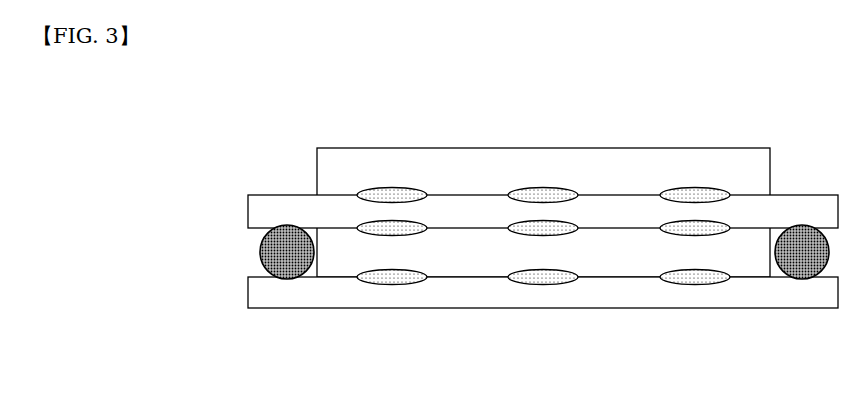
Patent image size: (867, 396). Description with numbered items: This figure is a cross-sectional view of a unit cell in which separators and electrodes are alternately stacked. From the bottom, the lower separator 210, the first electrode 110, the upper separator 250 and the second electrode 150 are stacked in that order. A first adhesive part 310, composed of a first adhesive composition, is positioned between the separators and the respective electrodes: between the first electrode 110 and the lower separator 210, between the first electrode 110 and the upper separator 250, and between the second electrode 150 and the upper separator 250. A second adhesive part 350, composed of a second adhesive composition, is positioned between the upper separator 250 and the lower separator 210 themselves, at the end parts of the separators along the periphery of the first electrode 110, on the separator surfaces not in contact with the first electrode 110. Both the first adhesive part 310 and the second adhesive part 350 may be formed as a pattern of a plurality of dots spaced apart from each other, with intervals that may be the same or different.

The first electrode 110 is at (620, 258).
The second electrode 150 is at (343, 163).
The lower separator 210 is at (262, 291).
The upper separator 250 is at (262, 211).
The first adhesive part 310 is at (365, 182).
The second adhesive part 350 is at (258, 252).